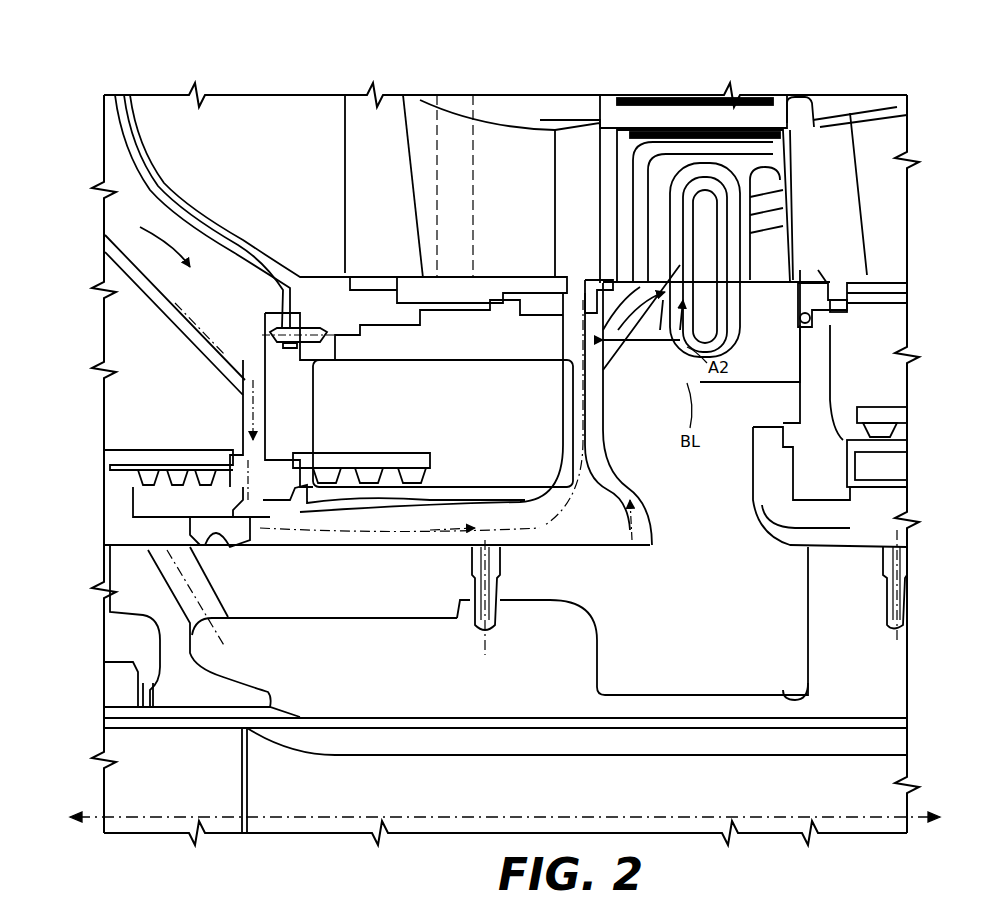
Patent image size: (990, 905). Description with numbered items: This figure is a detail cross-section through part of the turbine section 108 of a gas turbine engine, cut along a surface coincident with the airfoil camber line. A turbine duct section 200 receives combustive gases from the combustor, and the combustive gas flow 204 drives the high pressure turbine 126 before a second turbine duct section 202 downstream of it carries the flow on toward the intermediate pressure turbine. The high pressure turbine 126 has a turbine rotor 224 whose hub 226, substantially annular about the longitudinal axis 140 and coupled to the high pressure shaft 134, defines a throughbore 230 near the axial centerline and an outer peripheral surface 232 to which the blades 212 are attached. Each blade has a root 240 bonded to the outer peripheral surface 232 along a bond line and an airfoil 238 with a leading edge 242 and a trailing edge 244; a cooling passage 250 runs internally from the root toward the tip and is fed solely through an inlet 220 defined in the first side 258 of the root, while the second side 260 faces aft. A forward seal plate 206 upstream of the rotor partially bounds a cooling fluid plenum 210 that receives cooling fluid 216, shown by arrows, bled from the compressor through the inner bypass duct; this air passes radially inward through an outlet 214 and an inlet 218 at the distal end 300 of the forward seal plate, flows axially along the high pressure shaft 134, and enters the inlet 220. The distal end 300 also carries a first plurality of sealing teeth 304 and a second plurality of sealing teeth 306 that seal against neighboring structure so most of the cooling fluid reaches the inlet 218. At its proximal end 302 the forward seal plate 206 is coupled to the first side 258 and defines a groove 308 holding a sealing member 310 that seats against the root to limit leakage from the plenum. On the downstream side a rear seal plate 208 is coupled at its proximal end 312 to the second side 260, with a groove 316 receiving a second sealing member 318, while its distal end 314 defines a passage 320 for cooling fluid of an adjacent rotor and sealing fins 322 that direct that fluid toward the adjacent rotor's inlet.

The turbine section 108 is at (838, 68).
The high pressure turbine 126 is at (802, 143).
The high pressure shaft 134 is at (405, 545).
The longitudinal axis 140 is at (807, 819).
The turbine duct section 200 is at (392, 113).
The second turbine duct section 202 is at (813, 127).
The combustive gas flow 204 is at (303, 167).
The forward seal plate 206 is at (558, 470).
The rear seal plate 208 is at (838, 382).
The cooling fluid plenum 210 is at (370, 537).
The blades 212 is at (595, 145).
The outlet 214 is at (210, 487).
The cooling fluid 216 is at (162, 253).
The inlet 218 is at (227, 527).
The inlet 220 is at (600, 387).
The turbine rotor 224 is at (843, 273).
The hub 226 is at (847, 513).
The throughbore 230 is at (798, 700).
The outer peripheral surface 232 is at (743, 383).
The airfoil 238 is at (793, 183).
The root 240 is at (805, 347).
The leading edge 242 is at (613, 163).
The trailing edge 244 is at (793, 205).
The cooling passage 250 is at (633, 270).
The first side 258 is at (578, 263).
The second side 260 is at (825, 267).
The distal end 300 is at (415, 477).
The proximal end 302 is at (548, 336).
The first plurality of sealing teeth 304 is at (357, 457).
The second plurality of sealing teeth 306 is at (190, 487).
The groove 308 is at (597, 327).
The sealing member 310 is at (595, 315).
The proximal end 312 is at (857, 318).
The distal end 314 is at (880, 433).
The groove 316 is at (890, 297).
The second sealing member 318 is at (805, 313).
The passage 320 is at (847, 503).
The sealing fins 322 is at (903, 435).